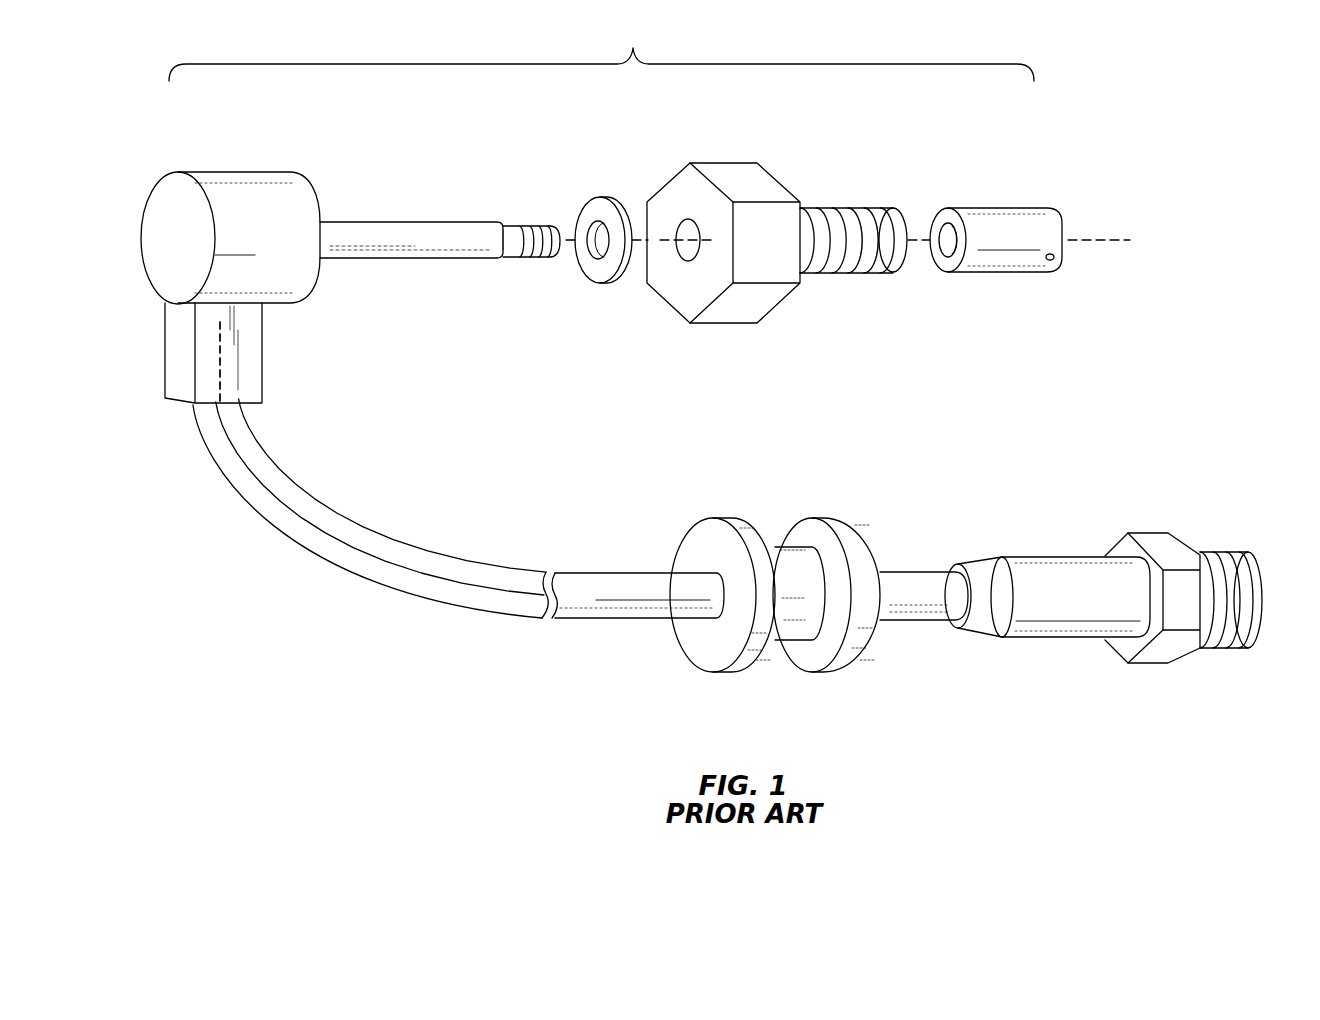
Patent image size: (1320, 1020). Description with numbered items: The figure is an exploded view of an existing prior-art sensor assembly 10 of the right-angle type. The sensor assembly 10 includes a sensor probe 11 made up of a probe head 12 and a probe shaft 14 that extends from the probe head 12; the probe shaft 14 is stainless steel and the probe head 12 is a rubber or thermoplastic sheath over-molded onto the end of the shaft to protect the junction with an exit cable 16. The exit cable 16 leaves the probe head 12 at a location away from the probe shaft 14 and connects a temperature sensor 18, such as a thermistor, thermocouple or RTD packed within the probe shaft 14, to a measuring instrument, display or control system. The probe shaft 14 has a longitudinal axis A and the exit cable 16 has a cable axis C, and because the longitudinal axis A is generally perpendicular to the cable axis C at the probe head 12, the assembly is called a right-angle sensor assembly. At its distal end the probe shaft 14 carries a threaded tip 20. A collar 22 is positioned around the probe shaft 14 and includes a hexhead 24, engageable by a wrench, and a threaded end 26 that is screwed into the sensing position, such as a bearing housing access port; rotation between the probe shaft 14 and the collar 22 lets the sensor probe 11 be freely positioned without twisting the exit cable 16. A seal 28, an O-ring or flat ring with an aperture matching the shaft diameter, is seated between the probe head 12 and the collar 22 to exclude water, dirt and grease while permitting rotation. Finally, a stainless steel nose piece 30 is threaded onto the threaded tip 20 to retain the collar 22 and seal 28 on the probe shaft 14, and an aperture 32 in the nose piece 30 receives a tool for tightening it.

The sensor assembly 10 is at (324, 570).
The sensor probe 11 is at (248, 172).
The probe head 12 is at (232, 283).
The probe shaft 14 is at (460, 220).
The exit cable 16 is at (328, 505).
The temperature sensor 18 is at (513, 232).
The threaded tip 20 is at (549, 259).
The collar 22 is at (835, 276).
The hexhead 24 is at (750, 307).
The threaded end 26 is at (875, 267).
The seal 28 is at (604, 198).
The nose piece 30 is at (992, 272).
The aperture 32 is at (1053, 261).
The longitudinal axis A is at (859, 240).
The cable axis C is at (392, 565).